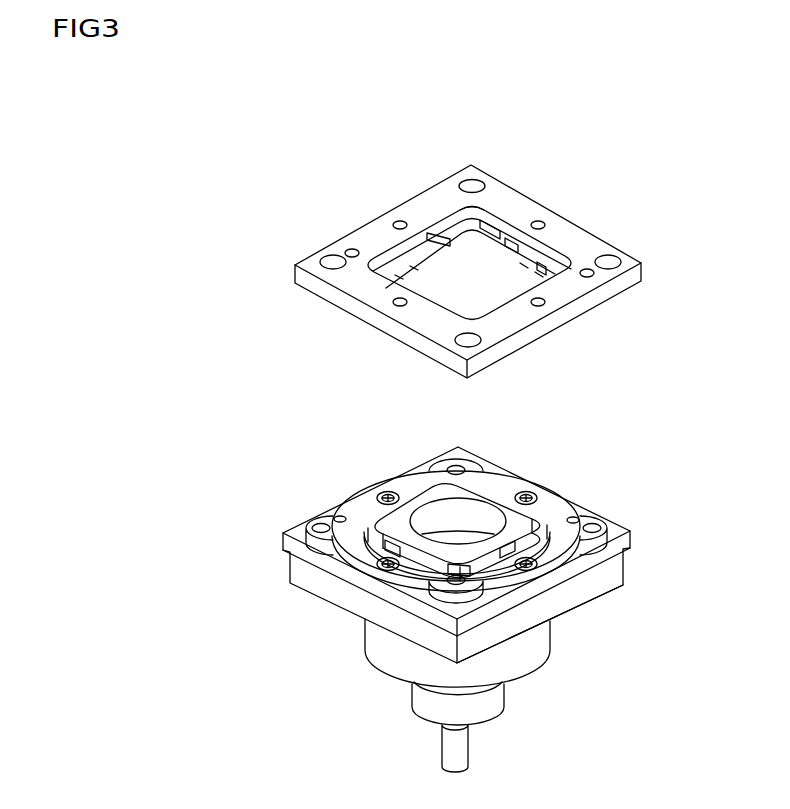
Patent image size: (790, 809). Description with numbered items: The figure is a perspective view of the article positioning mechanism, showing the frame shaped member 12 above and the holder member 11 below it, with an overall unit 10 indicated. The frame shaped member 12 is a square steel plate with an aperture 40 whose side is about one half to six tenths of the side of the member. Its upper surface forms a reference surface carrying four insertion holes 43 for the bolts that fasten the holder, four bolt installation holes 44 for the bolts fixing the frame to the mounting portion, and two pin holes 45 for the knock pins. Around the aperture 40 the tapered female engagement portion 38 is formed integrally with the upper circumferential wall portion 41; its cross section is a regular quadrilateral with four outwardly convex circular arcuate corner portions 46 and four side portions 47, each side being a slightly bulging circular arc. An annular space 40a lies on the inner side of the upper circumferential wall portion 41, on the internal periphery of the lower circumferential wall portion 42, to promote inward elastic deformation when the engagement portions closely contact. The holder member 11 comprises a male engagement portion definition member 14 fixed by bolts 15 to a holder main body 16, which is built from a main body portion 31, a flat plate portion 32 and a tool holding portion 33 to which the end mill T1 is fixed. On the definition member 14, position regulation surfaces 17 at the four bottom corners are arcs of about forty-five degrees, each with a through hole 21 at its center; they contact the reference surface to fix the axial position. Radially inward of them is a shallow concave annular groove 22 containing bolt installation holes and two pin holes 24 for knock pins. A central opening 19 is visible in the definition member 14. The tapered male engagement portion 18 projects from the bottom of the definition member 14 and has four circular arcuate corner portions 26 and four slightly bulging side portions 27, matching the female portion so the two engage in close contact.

The upper frame unit 10 is at (548, 133).
The holder member 11 is at (662, 498).
The frame shaped member 12 is at (570, 210).
The male engagement portion definition member 14 is at (548, 487).
The bolts 15 is at (527, 492).
The holder main body 16 is at (625, 575).
The position regulation surfaces 17 is at (430, 465).
The tapered male engagement portion 18 is at (473, 480).
The center hole 19 is at (453, 505).
The through hole 21 is at (598, 526).
The shallow concave annular groove 22 is at (363, 500).
The pin holes 24 is at (572, 518).
The circular arcuate corner portions 26 is at (468, 572).
The side portions 27 is at (515, 547).
The main body portion 31 is at (530, 660).
The flat plate portion 32 is at (615, 580).
The tool holding portion 33 is at (487, 703).
The end mill T1 is at (462, 753).
The tapered female engagement portion 38 is at (543, 271).
The aperture 40 is at (483, 278).
The annular space 40a is at (462, 202).
The upper circumferential wall portion 41 is at (427, 247).
The lower circumferential wall portion 42 is at (387, 248).
The insertion holes 43 is at (612, 258).
The bolt installation holes 44 is at (400, 306).
The pin holes 45 is at (346, 252).
The circular arcuate corner portions 46 is at (490, 223).
The side portions 47 is at (518, 250).